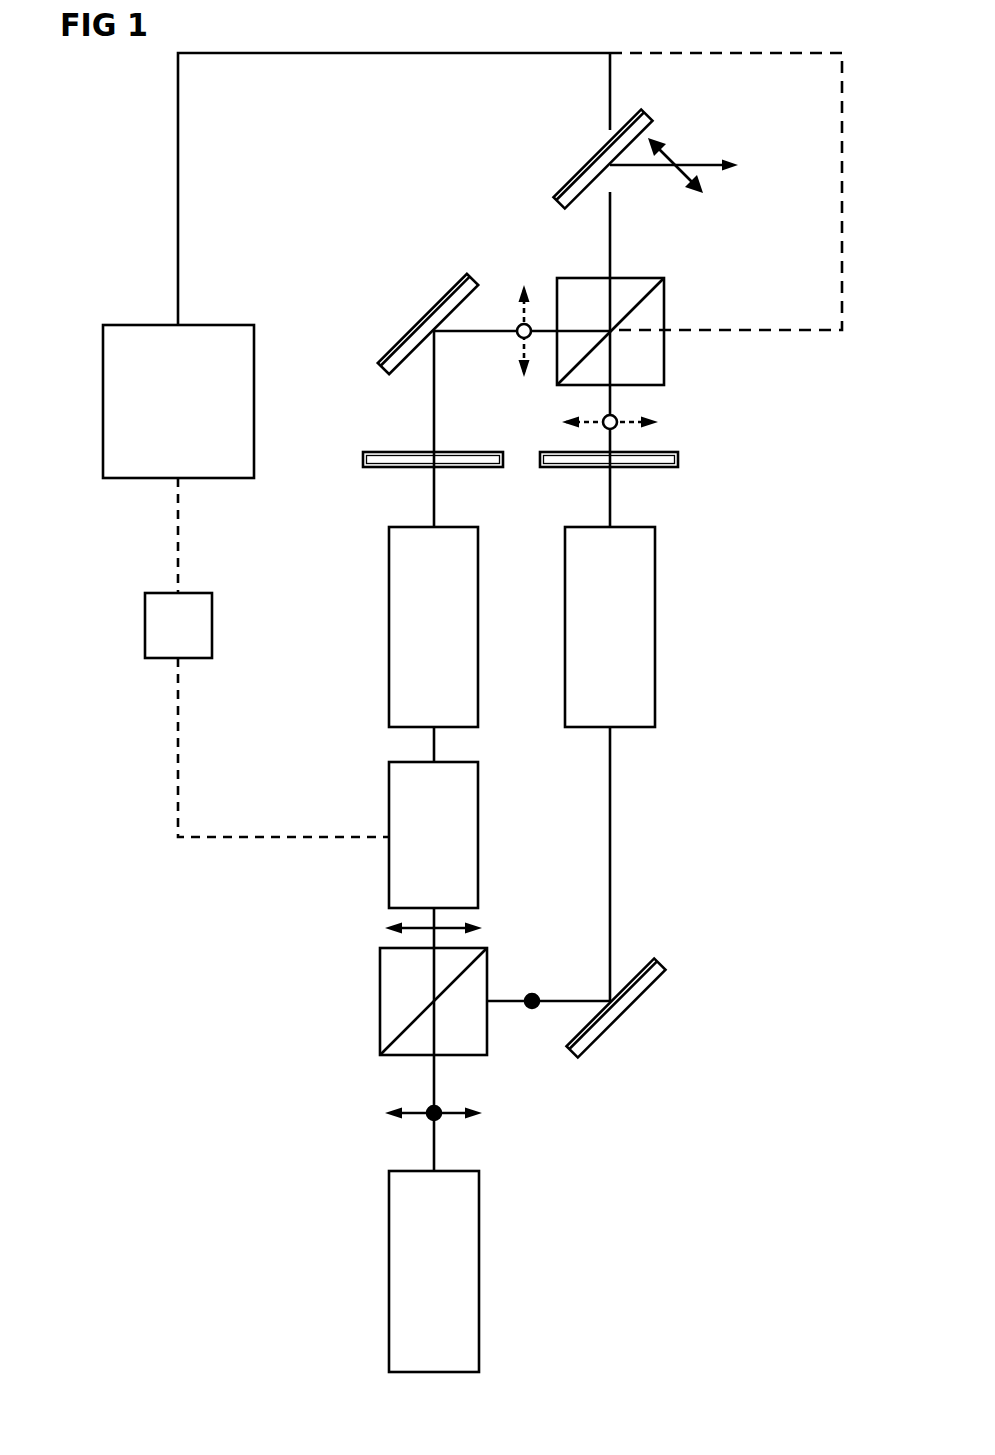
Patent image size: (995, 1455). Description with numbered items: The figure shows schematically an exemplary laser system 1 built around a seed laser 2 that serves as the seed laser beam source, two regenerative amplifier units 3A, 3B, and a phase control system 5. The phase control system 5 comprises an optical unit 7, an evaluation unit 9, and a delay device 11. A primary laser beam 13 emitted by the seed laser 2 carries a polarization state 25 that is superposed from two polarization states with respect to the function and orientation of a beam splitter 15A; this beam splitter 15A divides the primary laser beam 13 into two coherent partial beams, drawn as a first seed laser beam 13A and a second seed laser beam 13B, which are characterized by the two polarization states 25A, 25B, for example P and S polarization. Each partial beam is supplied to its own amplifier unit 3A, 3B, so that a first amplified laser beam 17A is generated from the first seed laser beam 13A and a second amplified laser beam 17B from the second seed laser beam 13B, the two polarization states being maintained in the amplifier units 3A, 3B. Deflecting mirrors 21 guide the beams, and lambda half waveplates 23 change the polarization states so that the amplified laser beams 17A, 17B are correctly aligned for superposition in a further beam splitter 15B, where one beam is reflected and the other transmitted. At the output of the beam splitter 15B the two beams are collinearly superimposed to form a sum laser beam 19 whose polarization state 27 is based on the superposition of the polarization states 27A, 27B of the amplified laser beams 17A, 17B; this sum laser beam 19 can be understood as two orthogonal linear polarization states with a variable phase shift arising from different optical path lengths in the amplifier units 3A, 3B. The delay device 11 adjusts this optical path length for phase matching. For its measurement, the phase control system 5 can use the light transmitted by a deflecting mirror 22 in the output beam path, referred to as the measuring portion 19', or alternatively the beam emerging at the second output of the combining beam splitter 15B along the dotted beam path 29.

The laser system 1 is at (108, 154).
The seed laser 2 is at (389, 1270).
The regenerative amplifier unit 3A is at (389, 627).
The regenerative amplifier unit 3B is at (565, 627).
The phase control system 5 is at (92, 278).
The optical unit 7 is at (255, 405).
The evaluation unit 9 is at (213, 628).
The delay device 11 is at (480, 838).
The primary laser beam 13 is at (434, 1143).
The first seed laser beam 13A is at (432, 940).
The second seed laser beam 13B is at (612, 838).
The beam splitter 15A is at (380, 1000).
The beam splitter 15B is at (665, 295).
The first amplified laser beam 17A is at (434, 493).
The second amplified laser beam 17B is at (610, 493).
The sum laser beam 19 is at (678, 132).
The measuring portion 19' is at (394, 189).
The deflecting mirror 21 is at (422, 320).
The deflecting mirror 22 is at (583, 170).
The lambda half waveplates 23 is at (552, 452).
The polarization state 25 is at (448, 1112).
The polarization state 25A is at (448, 925).
The polarization state 25B is at (533, 1010).
The polarization state 27 is at (672, 160).
The polarization state 27A is at (532, 324).
The polarization state 27B is at (621, 415).
The dotted beam path 29 is at (842, 213).